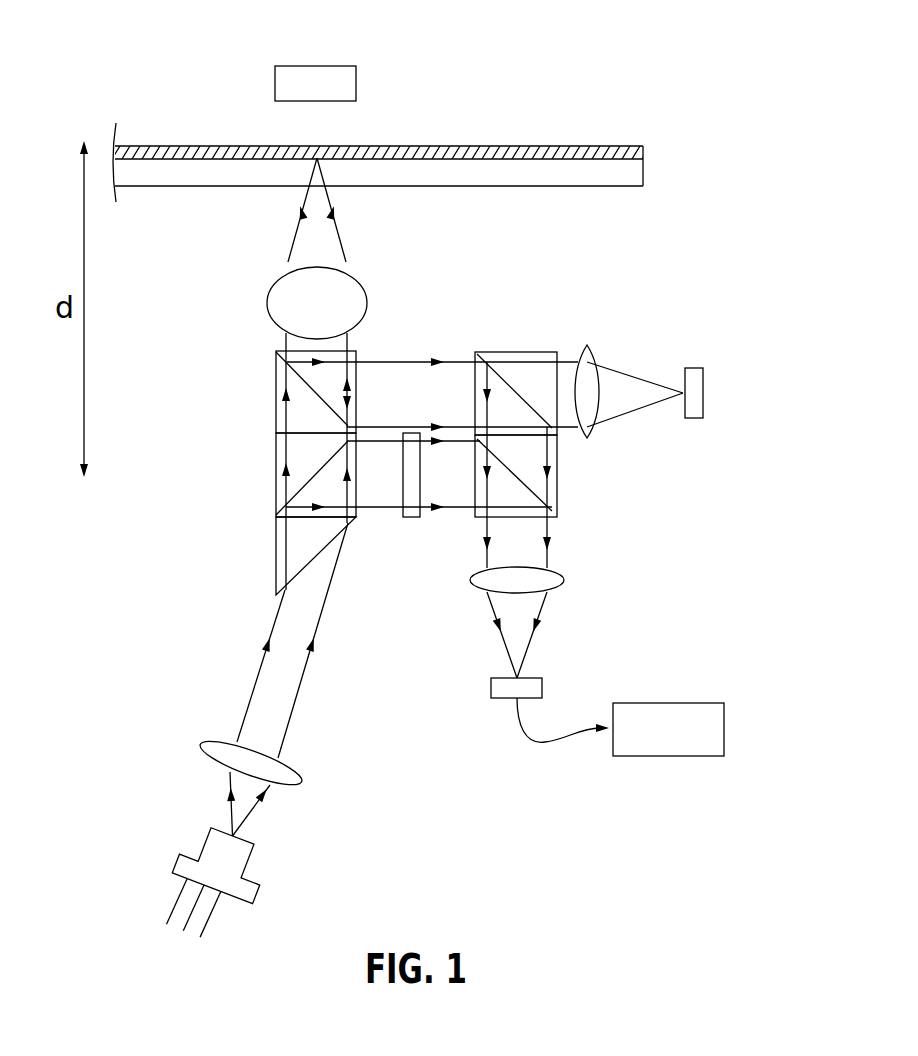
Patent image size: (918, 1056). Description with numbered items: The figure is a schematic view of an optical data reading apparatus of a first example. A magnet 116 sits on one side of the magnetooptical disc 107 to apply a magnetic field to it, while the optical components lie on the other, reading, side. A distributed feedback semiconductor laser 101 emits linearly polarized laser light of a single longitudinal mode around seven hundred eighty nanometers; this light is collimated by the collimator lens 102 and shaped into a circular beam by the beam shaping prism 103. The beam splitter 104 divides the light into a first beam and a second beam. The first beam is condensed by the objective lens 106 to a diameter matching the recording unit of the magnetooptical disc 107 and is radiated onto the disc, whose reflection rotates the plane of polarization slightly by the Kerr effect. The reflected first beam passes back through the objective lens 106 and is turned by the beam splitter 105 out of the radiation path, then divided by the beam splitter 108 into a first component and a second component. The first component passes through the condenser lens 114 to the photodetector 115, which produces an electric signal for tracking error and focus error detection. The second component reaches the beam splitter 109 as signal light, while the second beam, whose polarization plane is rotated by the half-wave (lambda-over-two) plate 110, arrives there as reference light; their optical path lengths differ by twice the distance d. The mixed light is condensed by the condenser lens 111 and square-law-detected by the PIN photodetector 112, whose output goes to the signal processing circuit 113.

The distributed feedback semiconductor laser 101 is at (177, 862).
The collimator lens 102 is at (200, 745).
The beam shaping prism 103 is at (276, 560).
The beam splitter 104 is at (276, 478).
The beam splitter 105 is at (276, 400).
The objective lens 106 is at (267, 305).
The magnetooptical disc 107 is at (595, 146).
The beam splitter 108 is at (508, 352).
The beam splitter 109 is at (557, 498).
The λ/2 plate 110 is at (412, 517).
The condenser lens 111 is at (556, 578).
The PIN photodetector 112 is at (542, 686).
The signal processing circuit 113 is at (693, 703).
The condenser lens 114 is at (590, 345).
The photodetector 115 is at (703, 378).
The magnet 116 is at (333, 66).